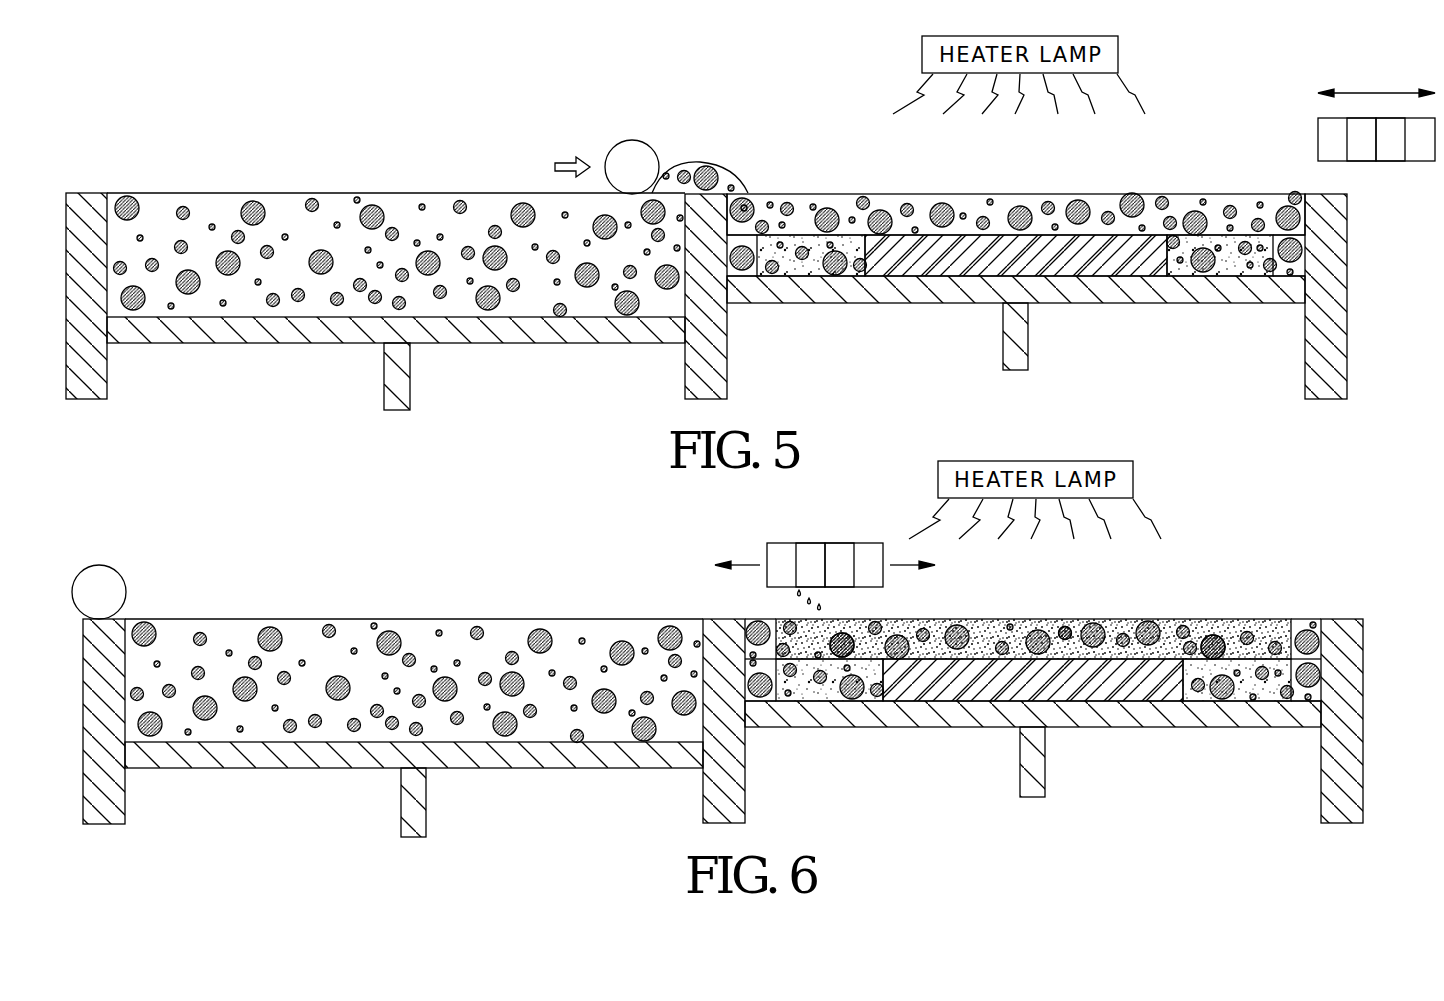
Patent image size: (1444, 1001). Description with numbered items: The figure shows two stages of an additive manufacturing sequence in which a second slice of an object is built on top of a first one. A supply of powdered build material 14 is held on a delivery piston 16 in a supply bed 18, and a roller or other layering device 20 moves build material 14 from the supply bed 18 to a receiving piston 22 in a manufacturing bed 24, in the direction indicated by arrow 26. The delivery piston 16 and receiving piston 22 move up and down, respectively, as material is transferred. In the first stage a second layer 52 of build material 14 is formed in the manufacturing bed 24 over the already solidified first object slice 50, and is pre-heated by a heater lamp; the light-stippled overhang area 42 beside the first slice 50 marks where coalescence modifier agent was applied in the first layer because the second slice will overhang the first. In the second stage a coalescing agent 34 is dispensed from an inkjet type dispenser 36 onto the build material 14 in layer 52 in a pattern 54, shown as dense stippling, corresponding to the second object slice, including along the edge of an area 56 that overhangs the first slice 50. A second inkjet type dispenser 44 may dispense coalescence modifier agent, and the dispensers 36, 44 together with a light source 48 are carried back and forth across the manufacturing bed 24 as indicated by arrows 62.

In FIG. 5, the build material 14 is at (727, 177).
In FIG. 5, the delivery piston 16 is at (402, 388).
In FIG. 6, the delivery piston 16 is at (420, 815).
In FIG. 5, the supply bed 18 is at (255, 338).
In FIG. 6, the supply bed 18 is at (273, 762).
In FIG. 5, the layering device 20 is at (645, 152).
In FIG. 6, the layering device 20 is at (109, 577).
In FIG. 5, the receiving piston 22 is at (1022, 345).
In FIG. 6, the receiving piston 22 is at (1040, 772).
In FIG. 5, the manufacturing bed 24 is at (877, 290).
In FIG. 6, the manufacturing bed 24 is at (895, 718).
In FIG. 5, the arrow 26 is at (565, 162).
In FIG. 6, the coalescing agent 34 is at (795, 595).
In FIG. 5, the inkjet type dispenser 36 is at (1362, 153).
In FIG. 6, the inkjet type dispenser 36 is at (808, 548).
In FIG. 5, the overhang area 42 is at (800, 265).
In FIG. 6, the overhang area 42 is at (805, 692).
In FIG. 5, the inkjet type dispenser 44 is at (1390, 153).
In FIG. 6, the inkjet type dispenser 44 is at (840, 548).
In FIG. 5, the light source 48 is at (1326, 143).
In FIG. 6, the light source 48 is at (782, 548).
In FIG. 5, the first object slice 50 is at (1125, 270).
In FIG. 6, the first object slice 50 is at (1150, 695).
In FIG. 5, the second layer 52 is at (1030, 203).
In FIG. 6, the second layer 52 is at (1075, 622).
In FIG. 6, the pattern 54 is at (985, 622).
In FIG. 6, the overhanging area 56 is at (850, 622).
In FIG. 5, the arrows 62 is at (1380, 92).
In FIG. 6, the arrows 62 is at (752, 566).